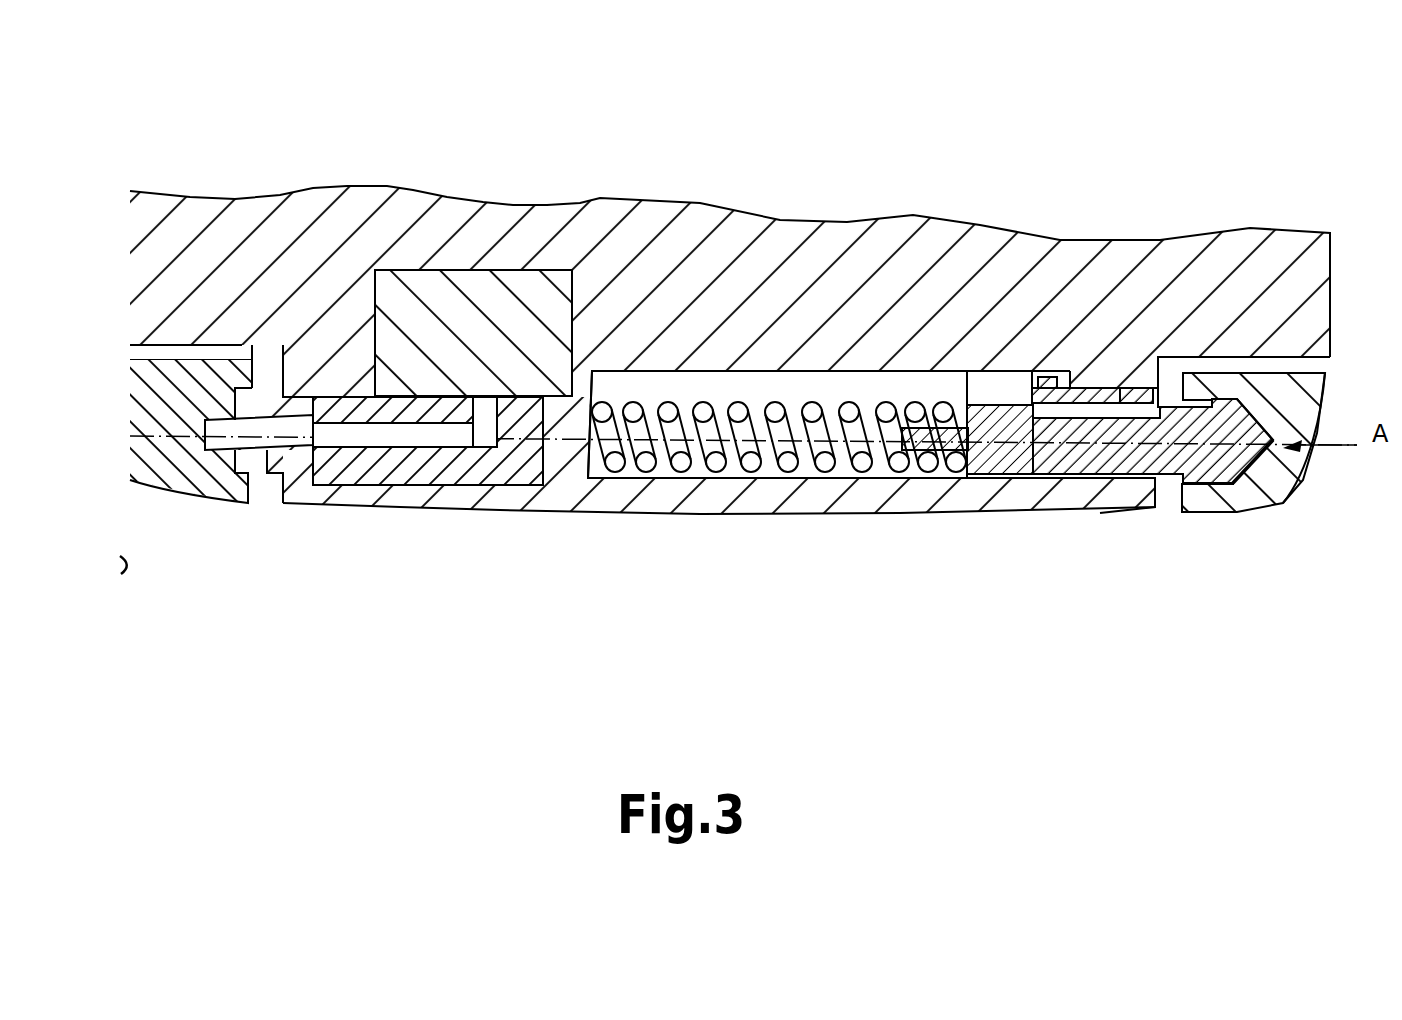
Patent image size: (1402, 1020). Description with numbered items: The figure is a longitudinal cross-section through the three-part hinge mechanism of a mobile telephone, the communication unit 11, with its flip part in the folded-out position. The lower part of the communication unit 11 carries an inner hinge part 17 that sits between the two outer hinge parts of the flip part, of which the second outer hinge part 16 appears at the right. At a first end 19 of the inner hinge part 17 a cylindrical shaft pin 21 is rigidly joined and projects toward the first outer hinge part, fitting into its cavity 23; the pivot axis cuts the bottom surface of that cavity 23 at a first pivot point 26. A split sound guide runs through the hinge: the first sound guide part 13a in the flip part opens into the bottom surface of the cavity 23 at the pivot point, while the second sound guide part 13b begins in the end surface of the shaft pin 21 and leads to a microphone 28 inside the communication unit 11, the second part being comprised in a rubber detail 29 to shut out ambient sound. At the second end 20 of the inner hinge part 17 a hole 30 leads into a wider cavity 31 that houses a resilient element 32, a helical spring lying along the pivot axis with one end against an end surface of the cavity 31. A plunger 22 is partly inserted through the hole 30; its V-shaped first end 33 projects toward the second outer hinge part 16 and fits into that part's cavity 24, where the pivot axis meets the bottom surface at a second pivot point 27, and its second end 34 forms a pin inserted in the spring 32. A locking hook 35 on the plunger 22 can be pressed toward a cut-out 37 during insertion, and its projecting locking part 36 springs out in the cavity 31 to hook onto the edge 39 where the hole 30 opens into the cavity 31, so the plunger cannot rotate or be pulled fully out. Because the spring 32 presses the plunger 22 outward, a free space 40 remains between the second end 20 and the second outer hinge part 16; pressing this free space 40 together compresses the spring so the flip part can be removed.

The communication unit 11 is at (1340, 262).
The first sound guide part 13a is at (235, 445).
The second sound guide part 13b is at (365, 448).
The second outer hinge part 16 is at (1270, 493).
The inner hinge part 17 is at (655, 515).
The first end 19 is at (285, 503).
The second end 20 is at (1122, 513).
The shaft pin 21 is at (265, 395).
The plunger 22 is at (1050, 410).
The cavity 23 is at (245, 393).
The cavity 24 is at (1205, 495).
The first pivot point 26 is at (247, 503).
The second pivot point 27 is at (1308, 458).
The microphone 28 is at (495, 293).
The rubber detail 29 is at (432, 485).
The hole 30 is at (1153, 387).
The cavity 31 is at (775, 385).
The resilient element 32 is at (700, 410).
The first end 33 is at (1245, 485).
The second end 34 is at (912, 408).
The locking hook 35 is at (1128, 390).
The projecting locking part 36 is at (1032, 388).
The cut-out 37 is at (1030, 470).
The edge 39 is at (1072, 385).
The free space 40 is at (1167, 493).